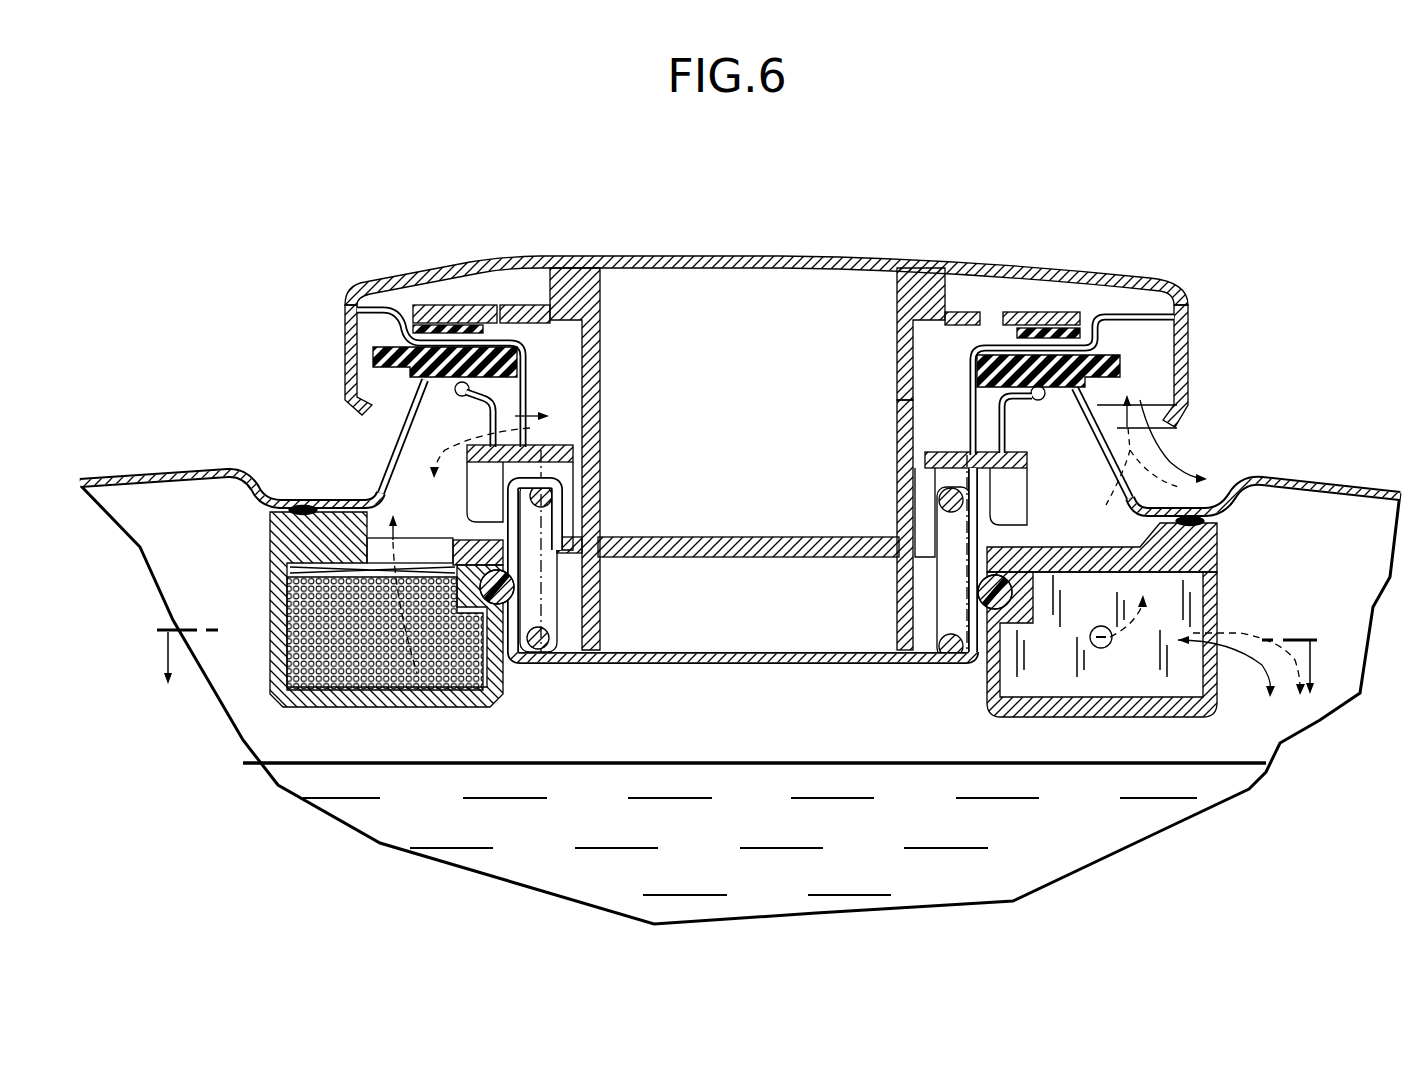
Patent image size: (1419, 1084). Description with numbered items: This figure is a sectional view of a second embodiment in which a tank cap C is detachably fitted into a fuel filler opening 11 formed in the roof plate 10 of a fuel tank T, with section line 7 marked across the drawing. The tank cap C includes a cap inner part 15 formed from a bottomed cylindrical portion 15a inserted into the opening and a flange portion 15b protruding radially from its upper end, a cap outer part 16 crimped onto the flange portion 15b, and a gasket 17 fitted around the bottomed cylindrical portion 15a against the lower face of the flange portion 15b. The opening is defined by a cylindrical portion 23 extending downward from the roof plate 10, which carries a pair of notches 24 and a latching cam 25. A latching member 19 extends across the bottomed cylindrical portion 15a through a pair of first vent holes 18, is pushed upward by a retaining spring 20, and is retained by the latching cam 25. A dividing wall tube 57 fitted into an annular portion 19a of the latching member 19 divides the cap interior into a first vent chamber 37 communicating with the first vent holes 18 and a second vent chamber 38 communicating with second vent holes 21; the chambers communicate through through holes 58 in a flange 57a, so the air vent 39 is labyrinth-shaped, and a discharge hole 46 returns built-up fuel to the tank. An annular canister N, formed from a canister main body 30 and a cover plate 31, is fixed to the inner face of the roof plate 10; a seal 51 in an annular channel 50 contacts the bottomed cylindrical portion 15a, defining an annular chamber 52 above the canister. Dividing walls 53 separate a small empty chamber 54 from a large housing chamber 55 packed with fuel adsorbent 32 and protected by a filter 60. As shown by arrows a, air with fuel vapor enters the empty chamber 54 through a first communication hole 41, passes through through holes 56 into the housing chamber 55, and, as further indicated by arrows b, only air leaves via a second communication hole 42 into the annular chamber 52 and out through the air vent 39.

The roof plate 10 is at (1317, 483).
The fuel filler opening 11 is at (527, 397).
The cap inner part 15 is at (992, 219).
The bottomed cylindrical portion 15a is at (922, 312).
The flange portion 15b is at (1095, 279).
The cap outer part 16 is at (1172, 283).
The gasket 17 is at (1115, 358).
The first vent holes 18 is at (508, 404).
The latching member 19 is at (897, 458).
The annular portion 19a is at (562, 520).
The retaining spring 20 is at (548, 622).
The second vent holes 21 is at (1140, 300).
The cylindrical portion 23 is at (575, 448).
The notches 24 is at (470, 399).
The latching cam 25 is at (1003, 465).
The canister main body 30 is at (1068, 718).
The cover plate 31 is at (1117, 572).
The fuel adsorbent 32 is at (430, 672).
The first vent chamber 37 is at (563, 348).
The second vent chamber 38 is at (430, 285).
The air vent 39 is at (482, 294).
The first communication hole 41 is at (1212, 628).
The second communication hole 42 is at (388, 560).
The discharge hole 46 is at (745, 662).
The annular channel 50 is at (495, 568).
The seal 51 is at (509, 600).
The annular chamber 52 is at (410, 452).
The dividing walls 53 is at (1013, 672).
The empty chamber 54 is at (1036, 671).
The housing chamber 55 is at (365, 668).
The through holes 56 is at (1101, 648).
The dividing wall tube 57 is at (898, 388).
The flange 57a is at (535, 318).
The through holes 58 is at (512, 322).
The filter 60 is at (303, 503).
The section line 7 is at (738, 665).
The tank cap C is at (754, 256).
The fuel tank T is at (1345, 518).
The canister N is at (1143, 727).
The arrows a is at (1170, 448).
The flow b is at (1200, 616).